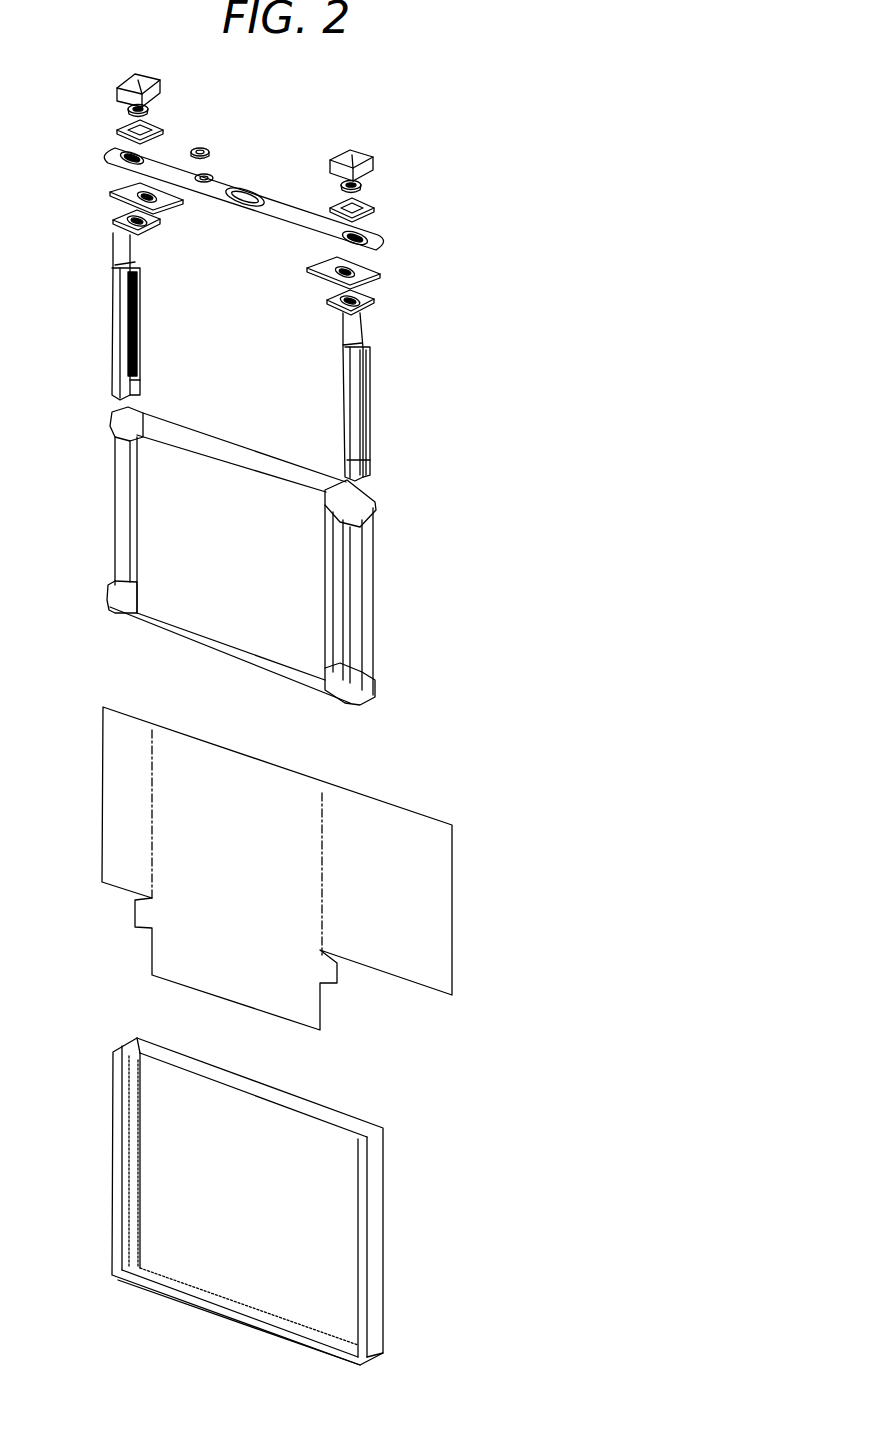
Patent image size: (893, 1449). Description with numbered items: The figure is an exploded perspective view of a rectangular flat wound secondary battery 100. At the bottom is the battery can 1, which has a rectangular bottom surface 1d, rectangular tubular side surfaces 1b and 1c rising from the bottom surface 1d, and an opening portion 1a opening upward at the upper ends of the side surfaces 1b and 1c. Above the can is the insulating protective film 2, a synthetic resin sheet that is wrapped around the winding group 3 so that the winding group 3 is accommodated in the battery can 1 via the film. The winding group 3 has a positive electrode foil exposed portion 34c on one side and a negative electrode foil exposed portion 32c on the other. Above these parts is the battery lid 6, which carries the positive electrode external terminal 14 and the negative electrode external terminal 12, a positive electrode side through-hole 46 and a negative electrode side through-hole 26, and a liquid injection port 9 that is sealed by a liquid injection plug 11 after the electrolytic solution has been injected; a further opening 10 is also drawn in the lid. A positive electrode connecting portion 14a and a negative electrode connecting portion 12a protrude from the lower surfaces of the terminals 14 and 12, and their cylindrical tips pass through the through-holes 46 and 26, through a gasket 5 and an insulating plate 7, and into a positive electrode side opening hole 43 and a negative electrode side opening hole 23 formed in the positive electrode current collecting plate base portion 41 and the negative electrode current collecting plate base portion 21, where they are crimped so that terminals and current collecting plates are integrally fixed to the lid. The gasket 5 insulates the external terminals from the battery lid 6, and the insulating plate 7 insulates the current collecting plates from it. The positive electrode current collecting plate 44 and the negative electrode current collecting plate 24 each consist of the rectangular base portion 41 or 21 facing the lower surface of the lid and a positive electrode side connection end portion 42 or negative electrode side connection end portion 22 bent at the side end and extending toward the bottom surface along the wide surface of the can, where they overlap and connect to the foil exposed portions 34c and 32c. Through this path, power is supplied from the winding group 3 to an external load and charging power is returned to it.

The flat wound secondary battery 100 is at (482, 193).
The battery can 1 is at (281, 1196).
The opening portion 1a is at (127, 1043).
The side surface 1b is at (167, 1208).
The side surface 1c is at (377, 1290).
The bottom surface 1d is at (200, 1302).
The insulating protective film 2 is at (427, 933).
The winding group 3 is at (240, 556).
The negative electrode foil exposed portion 32c is at (355, 628).
The positive electrode foil exposed portion 34c is at (120, 540).
The gasket 5 is at (120, 130).
The battery lid 6 is at (304, 207).
The insulating plate 7 is at (118, 192).
The liquid injection port 9 is at (207, 173).
The elongated hole 10 is at (250, 189).
The liquid injection plug 11 is at (199, 147).
The negative electrode external terminal 12 is at (374, 160).
The negative electrode connecting portion 12a is at (362, 187).
The positive electrode external terminal 14 is at (120, 84).
The positive electrode connecting portion 14a is at (129, 107).
The negative electrode current collecting plate base portion 21 is at (376, 297).
The negative electrode side connection end portion 22 is at (360, 436).
The negative electrode side opening hole 23 is at (338, 296).
The negative electrode current collecting plate 24 is at (367, 393).
The negative electrode side through-hole 26 is at (370, 236).
The positive electrode current collecting plate base portion 41 is at (116, 216).
The positive electrode side connection end portion 42 is at (120, 363).
The positive electrode side opening hole 43 is at (147, 227).
The positive electrode current collecting plate 44 is at (117, 318).
The positive electrode side through-hole 46 is at (119, 154).